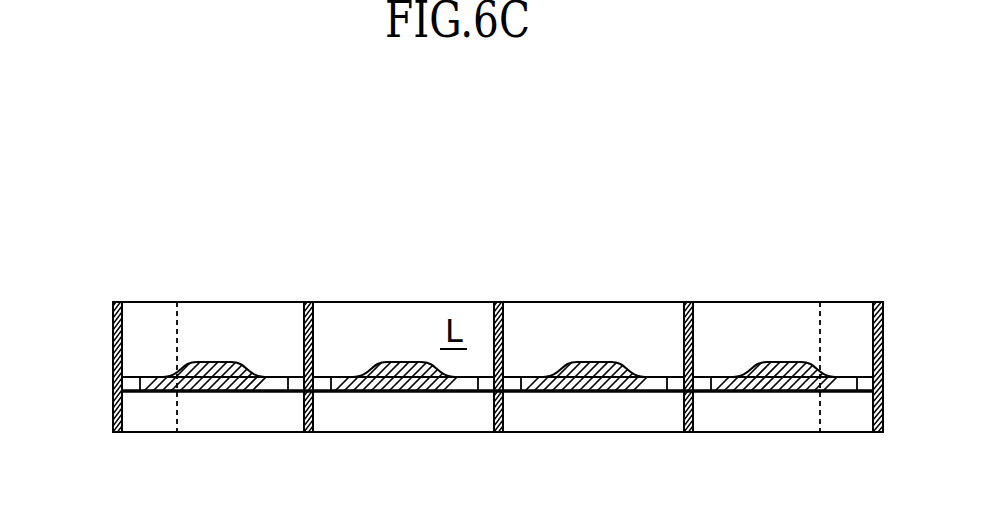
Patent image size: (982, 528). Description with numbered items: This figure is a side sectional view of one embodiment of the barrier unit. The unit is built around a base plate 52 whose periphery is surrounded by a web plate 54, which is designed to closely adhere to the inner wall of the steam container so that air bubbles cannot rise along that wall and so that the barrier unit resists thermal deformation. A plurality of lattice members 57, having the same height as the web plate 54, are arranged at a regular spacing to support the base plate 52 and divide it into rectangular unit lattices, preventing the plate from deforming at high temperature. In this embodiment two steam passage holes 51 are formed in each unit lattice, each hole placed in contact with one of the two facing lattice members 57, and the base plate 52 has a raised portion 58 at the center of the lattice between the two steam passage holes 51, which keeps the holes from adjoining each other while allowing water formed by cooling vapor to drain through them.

The steam passage hole 51 is at (131, 385).
The base plate 52 is at (202, 393).
The web plate 54 is at (113, 327).
The lattice member 57 is at (315, 325).
The raised portion 58 is at (215, 362).